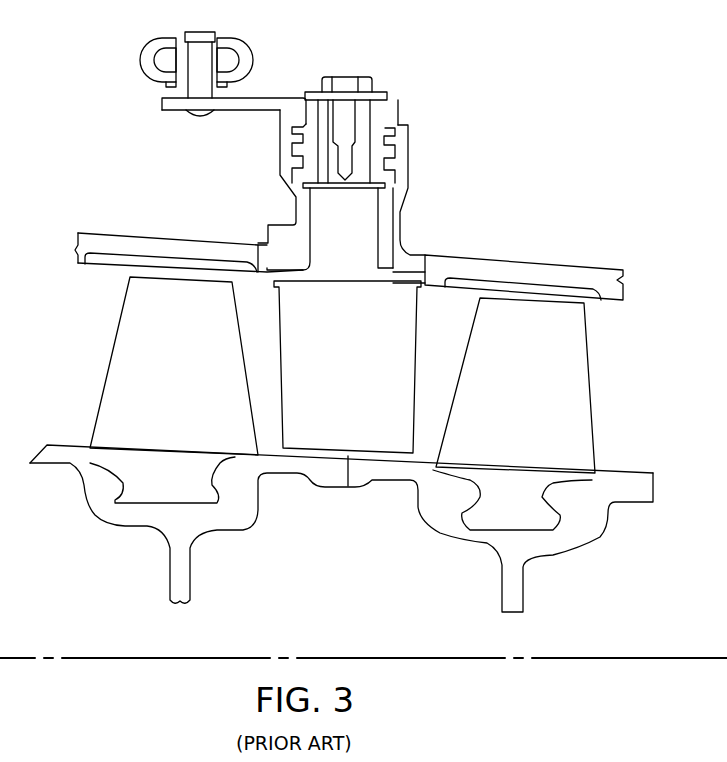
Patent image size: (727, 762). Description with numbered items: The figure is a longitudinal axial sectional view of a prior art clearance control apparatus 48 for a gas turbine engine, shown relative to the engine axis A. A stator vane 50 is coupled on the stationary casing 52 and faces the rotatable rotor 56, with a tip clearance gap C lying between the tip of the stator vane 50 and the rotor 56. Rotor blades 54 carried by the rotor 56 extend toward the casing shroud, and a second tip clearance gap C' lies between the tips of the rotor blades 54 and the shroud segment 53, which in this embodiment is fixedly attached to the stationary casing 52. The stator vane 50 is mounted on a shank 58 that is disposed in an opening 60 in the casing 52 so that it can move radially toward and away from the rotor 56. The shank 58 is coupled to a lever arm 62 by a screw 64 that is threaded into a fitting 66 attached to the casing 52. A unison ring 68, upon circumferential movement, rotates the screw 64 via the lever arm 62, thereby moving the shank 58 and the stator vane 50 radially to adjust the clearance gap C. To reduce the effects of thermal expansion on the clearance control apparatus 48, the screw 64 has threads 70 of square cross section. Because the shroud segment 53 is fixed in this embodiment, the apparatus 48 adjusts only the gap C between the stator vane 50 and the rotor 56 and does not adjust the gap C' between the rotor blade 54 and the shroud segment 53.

The clearance control apparatus 48 is at (493, 80).
The stator vane 50 is at (354, 365).
The stationary casing 52 is at (540, 262).
The shroud segment 53 is at (118, 262).
The rotor blade 54 is at (185, 365).
The rotor 56 is at (195, 533).
The shank 58 is at (360, 230).
The opening 60 is at (425, 253).
The lever arm 62 is at (267, 98).
The screw 64 is at (350, 126).
The fitting 66 is at (387, 170).
The unison ring 68 is at (234, 39).
The threads 70 is at (285, 163).
The tip clearance gap c is at (327, 481).
The tip clearance gap c' is at (599, 313).
The engine axis A is at (608, 658).